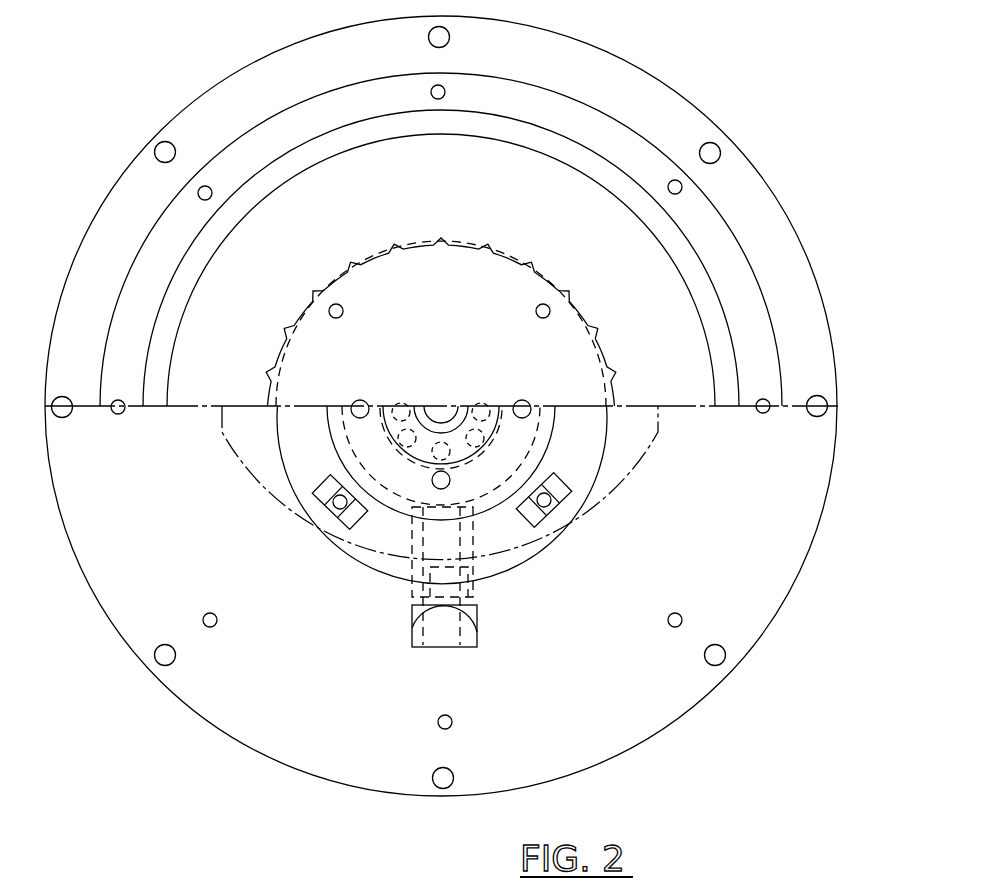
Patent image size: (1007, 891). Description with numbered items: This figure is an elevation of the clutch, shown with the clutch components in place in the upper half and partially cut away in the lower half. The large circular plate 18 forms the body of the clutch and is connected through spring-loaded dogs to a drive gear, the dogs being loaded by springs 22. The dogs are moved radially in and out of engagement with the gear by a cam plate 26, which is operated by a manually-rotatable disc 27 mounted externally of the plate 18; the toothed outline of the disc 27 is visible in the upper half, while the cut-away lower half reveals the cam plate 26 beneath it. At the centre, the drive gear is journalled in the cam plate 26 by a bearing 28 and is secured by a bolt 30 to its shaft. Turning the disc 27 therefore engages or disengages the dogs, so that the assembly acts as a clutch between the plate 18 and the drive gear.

The plate 18 is at (637, 95).
The springs 22 is at (476, 560).
The cam plate 26 is at (566, 547).
The manually-rotatable disc 27 is at (578, 302).
The bearing 28 is at (489, 406).
The bolt 30 is at (436, 410).